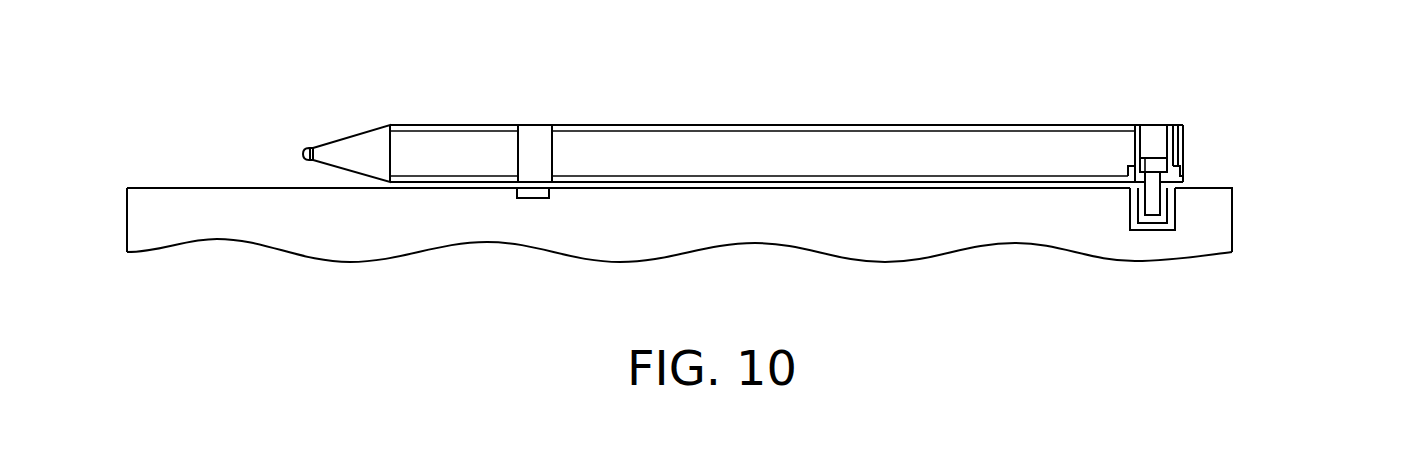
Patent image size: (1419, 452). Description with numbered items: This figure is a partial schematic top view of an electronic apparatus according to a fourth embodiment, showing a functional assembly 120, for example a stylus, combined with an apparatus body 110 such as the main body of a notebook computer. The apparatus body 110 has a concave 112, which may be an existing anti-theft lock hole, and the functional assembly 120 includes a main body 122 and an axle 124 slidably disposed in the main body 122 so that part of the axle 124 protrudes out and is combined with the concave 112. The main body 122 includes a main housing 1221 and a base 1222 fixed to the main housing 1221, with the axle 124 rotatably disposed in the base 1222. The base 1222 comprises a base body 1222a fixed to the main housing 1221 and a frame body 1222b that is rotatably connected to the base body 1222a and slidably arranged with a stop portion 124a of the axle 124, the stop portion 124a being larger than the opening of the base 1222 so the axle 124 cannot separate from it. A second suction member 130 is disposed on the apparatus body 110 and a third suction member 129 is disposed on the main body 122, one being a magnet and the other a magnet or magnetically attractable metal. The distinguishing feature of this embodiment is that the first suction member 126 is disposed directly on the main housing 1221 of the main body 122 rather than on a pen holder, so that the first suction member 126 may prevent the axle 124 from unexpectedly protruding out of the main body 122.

The apparatus body 110 is at (968, 227).
The concave 112 is at (1172, 209).
The functional assembly 120 is at (723, 108).
The main body 122 is at (1335, 98).
The main housing 1221 is at (1185, 162).
The base 1222 is at (1186, 139).
The base body 1222a is at (1183, 173).
The frame body 1222b is at (1135, 148).
The axle 124 is at (1152, 199).
The stop portion 124a is at (1152, 165).
The first suction member 126 is at (1155, 130).
The third suction member 129 is at (533, 145).
The second suction member 130 is at (533, 196).